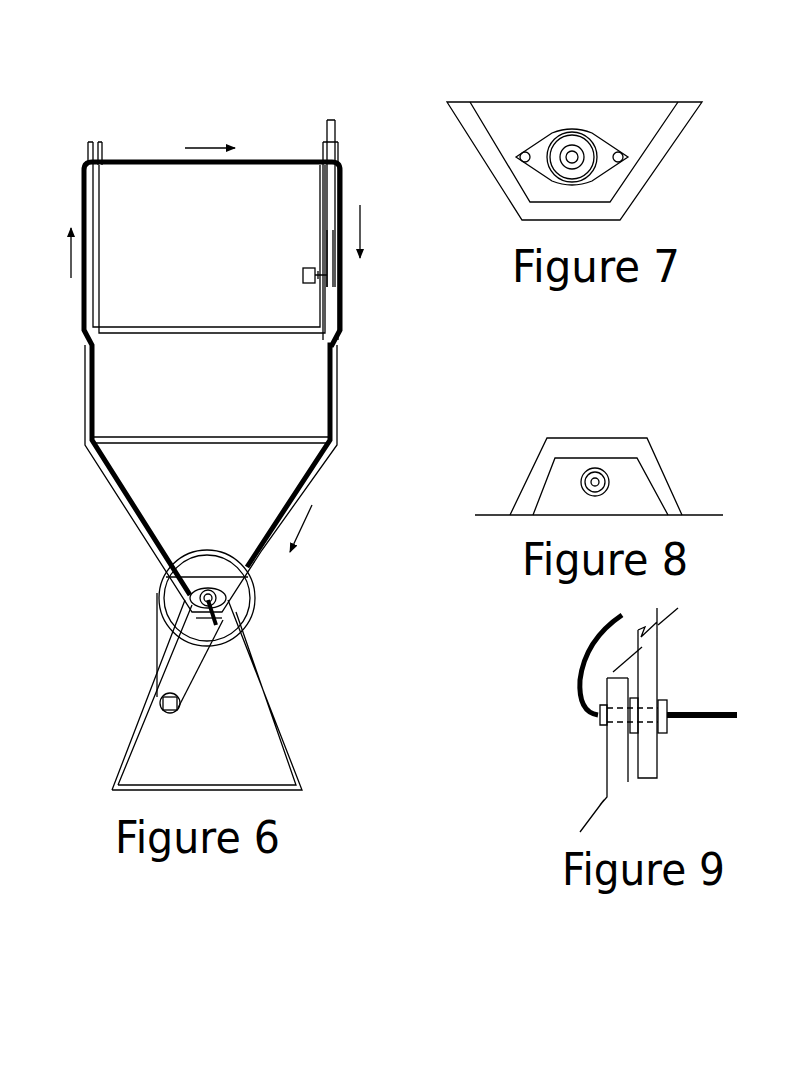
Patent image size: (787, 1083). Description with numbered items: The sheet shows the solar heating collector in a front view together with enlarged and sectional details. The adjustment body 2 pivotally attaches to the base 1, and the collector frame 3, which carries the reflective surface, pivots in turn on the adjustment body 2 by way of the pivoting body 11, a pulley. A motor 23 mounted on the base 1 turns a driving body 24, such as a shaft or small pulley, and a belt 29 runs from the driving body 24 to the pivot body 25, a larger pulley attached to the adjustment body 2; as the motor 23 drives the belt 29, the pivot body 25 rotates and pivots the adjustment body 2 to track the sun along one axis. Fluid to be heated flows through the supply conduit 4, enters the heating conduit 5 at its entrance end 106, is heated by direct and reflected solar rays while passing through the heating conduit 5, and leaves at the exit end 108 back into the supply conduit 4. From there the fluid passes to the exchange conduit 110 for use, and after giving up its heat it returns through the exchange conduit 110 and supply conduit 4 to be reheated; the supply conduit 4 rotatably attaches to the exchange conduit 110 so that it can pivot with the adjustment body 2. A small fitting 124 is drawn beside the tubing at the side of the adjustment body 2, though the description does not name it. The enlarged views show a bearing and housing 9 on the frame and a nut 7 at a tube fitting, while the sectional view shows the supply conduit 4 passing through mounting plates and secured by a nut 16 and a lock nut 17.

In FIG. 6, the base 1 is at (300, 760).
In FIG. 6, the adjustment body 2 is at (233, 440).
In FIG. 6, the collector frame 3 is at (275, 337).
In FIG. 6, the supply conduit 4 is at (308, 473).
In FIG. 9, the supply conduit 4 is at (580, 705).
In FIG. 6, the heating conduit 5 is at (170, 162).
In FIG. 8, the heating conduit 5 is at (583, 482).
In FIG. 8, the nut 7 is at (605, 471).
In FIG. 7, the bearing and housing 9 is at (578, 135).
In FIG. 6, the pivoting body 11 is at (342, 118).
In FIG. 9, the nut 16 is at (633, 693).
In FIG. 9, the lock nut 17 is at (665, 702).
In FIG. 6, the motor 23 is at (168, 712).
In FIG. 6, the driving body 24 is at (158, 700).
In FIG. 6, the pivot body 25 is at (212, 650).
In FIG. 6, the belt 29 is at (160, 638).
In FIG. 6, the entrance end 106 is at (118, 162).
In FIG. 6, the exit end 108 is at (303, 160).
In FIG. 6, the exchange conduit 110 is at (224, 606).
In FIG. 6, the connector fitting 124 is at (337, 287).